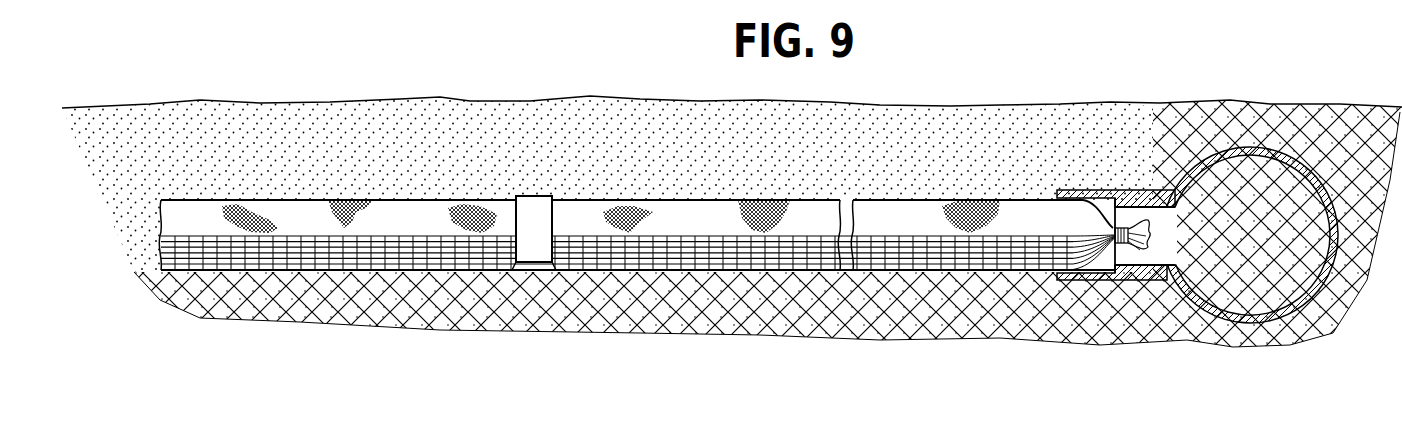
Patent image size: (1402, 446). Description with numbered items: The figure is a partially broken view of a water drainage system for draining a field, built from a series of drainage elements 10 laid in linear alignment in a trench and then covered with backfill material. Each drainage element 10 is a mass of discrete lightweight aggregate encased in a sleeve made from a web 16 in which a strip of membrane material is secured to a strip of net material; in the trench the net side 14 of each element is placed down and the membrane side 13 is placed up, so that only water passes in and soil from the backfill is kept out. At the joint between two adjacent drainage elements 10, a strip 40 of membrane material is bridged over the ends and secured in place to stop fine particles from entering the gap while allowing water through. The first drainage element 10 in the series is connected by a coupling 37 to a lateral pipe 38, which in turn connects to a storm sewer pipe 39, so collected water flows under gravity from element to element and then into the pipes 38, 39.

The drainage element 10 is at (232, 334).
The first peripheral portion of water-permeable filter material 13 is at (311, 210).
The second peripheral portion of net material 14 is at (329, 262).
The web 16 is at (424, 278).
The coupling 37 is at (1112, 190).
The lateral pipe 38 is at (1163, 282).
The storm sewer pipe 39 is at (1318, 323).
The strip of membrane material 40 is at (537, 200).